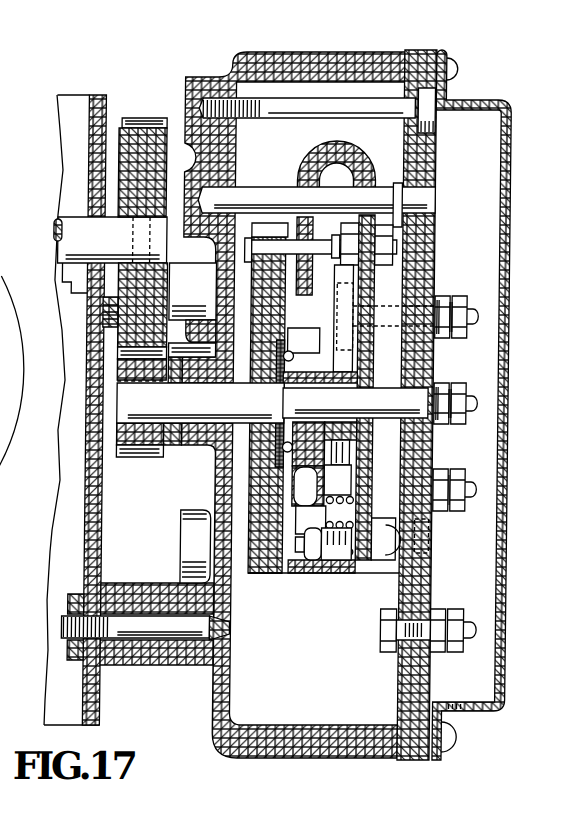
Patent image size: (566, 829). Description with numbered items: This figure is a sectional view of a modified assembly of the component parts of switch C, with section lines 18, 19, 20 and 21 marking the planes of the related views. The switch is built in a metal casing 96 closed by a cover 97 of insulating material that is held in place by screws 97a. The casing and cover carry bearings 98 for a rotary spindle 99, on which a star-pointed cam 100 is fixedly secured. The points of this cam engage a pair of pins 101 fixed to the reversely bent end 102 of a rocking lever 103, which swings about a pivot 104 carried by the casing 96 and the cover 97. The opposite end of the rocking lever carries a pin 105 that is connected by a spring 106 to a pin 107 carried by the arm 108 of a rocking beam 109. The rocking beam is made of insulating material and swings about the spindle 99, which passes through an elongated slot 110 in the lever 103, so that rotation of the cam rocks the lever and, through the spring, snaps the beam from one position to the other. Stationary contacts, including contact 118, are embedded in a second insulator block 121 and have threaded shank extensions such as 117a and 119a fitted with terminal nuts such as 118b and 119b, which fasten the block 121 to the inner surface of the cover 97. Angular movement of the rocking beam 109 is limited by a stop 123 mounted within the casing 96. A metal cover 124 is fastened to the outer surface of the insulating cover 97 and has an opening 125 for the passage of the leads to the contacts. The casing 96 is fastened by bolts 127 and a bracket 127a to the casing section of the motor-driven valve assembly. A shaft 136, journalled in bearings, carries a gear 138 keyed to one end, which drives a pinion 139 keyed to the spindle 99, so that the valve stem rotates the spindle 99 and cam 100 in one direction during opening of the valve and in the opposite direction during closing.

The section line 18- 18 is at (175, 45).
The section line 19- 19 is at (396, 52).
The section line 20- 20 is at (401, 70).
The section line 21- 21 is at (459, 100).
The metal casing 96 is at (232, 170).
The cover 97 is at (429, 238).
The screws 97a is at (300, 615).
The bearings 98 is at (203, 428).
The rotary spindle 99 is at (200, 403).
The star-pointed cam 100 is at (260, 570).
The pins 101 is at (330, 253).
The reversely bent end 102 is at (321, 156).
The rocking lever 103 is at (366, 366).
The pivot 104 is at (316, 205).
The pin 105 is at (347, 553).
The spring 106 is at (347, 515).
The pin 107 is at (348, 476).
The arm 108 is at (296, 513).
The rocking beam 109 is at (315, 368).
The elongated slot 110 is at (368, 386).
The threaded shank extension 117a is at (478, 490).
The stationary contact 118 is at (476, 404).
The terminal nut 118b is at (445, 380).
The threaded shank extension 119a is at (477, 316).
The terminal nut 119b is at (447, 293).
The second insulator block 121 is at (392, 291).
The stop 123 is at (304, 340).
The metal cover 124 is at (506, 533).
The opening 125 is at (475, 709).
The bolts 127 is at (233, 642).
The bracket 127a is at (87, 557).
The shaft 136 is at (66, 270).
The gear 138 is at (137, 118).
The pinion 139 is at (123, 458).